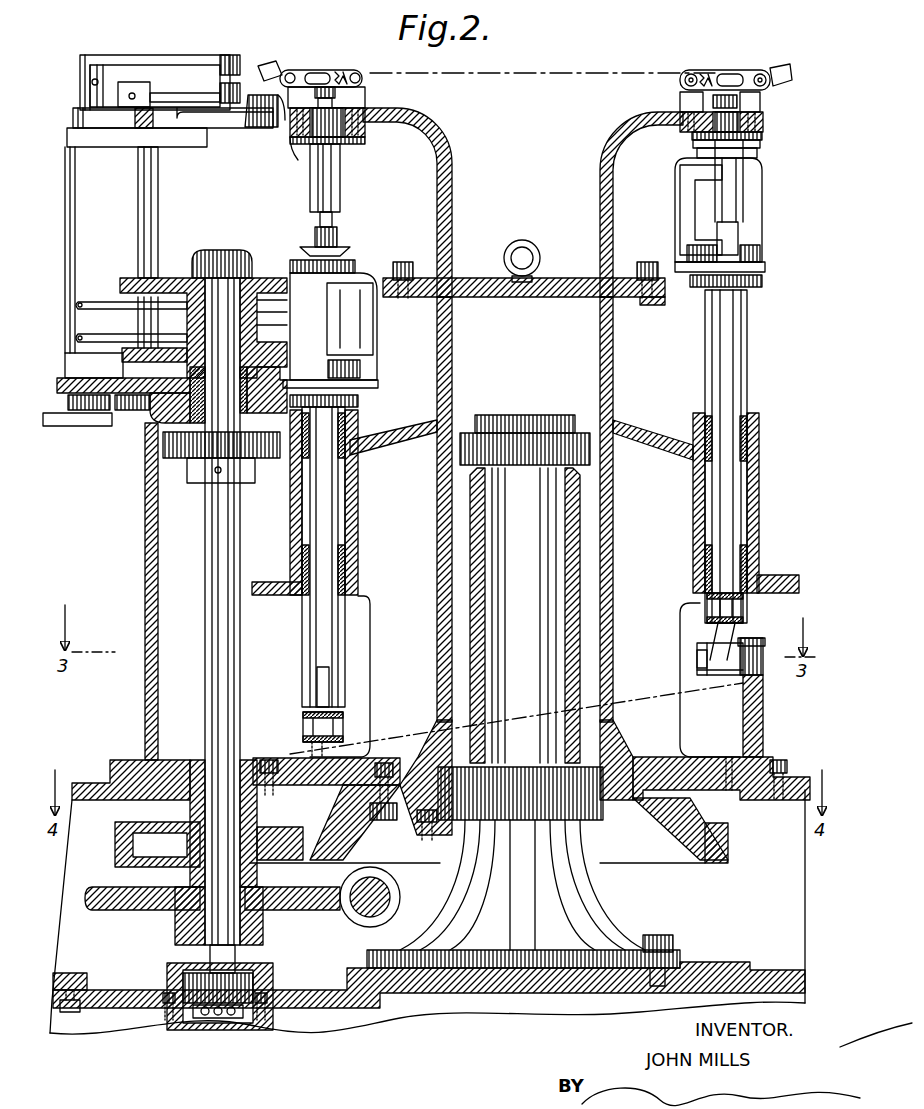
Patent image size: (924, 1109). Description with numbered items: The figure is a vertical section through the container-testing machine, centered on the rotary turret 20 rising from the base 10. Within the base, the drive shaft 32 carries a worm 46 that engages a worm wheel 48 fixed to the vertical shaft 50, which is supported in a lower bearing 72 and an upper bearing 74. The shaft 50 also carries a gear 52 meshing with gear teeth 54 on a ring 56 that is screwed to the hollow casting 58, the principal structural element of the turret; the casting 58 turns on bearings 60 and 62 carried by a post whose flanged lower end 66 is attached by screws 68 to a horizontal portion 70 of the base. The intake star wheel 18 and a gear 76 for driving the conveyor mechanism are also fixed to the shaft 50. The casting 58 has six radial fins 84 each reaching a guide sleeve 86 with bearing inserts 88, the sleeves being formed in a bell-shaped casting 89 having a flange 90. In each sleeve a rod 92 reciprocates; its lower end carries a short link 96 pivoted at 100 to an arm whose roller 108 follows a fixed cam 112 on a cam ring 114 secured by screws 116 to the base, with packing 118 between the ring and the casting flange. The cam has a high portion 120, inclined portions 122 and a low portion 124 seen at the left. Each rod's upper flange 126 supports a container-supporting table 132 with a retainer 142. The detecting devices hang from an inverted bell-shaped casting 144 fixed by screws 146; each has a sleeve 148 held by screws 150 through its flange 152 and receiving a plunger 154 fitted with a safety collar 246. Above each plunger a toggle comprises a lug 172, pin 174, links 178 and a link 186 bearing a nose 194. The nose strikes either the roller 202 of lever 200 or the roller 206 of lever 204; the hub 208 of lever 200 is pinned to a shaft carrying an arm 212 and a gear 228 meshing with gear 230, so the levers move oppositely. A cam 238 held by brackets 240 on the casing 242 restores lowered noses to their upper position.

The base 10 is at (803, 800).
The intake star wheel 18 is at (125, 278).
The rotary turret 20 is at (565, 128).
The drive shaft 32 is at (386, 906).
The worm 46 is at (401, 890).
The worm wheel 48 is at (105, 912).
The vertical shaft 50 is at (214, 256).
The gear 52 is at (125, 850).
The gear teeth 54 is at (730, 845).
The ring 56 is at (705, 862).
The hollow casting 58 is at (622, 752).
The bearing 60 is at (585, 822).
The bearing 62 is at (468, 432).
The flanged lower end 66 is at (590, 920).
The screws 68 is at (675, 940).
The horizontal portion 70 is at (703, 982).
The lower bearing 72 is at (248, 980).
The upper bearing 74 is at (190, 376).
The gear 76 is at (198, 482).
The fins 84 is at (371, 652).
The guide sleeve 86 is at (358, 498).
The bearing inserts 88 is at (346, 442).
The bell-shaped casting 89 is at (660, 432).
The flange 90 is at (262, 596).
The rod 92 is at (748, 381).
The short link 96 is at (320, 692).
The pivot 100 is at (346, 716).
The roller 108 is at (742, 688).
The cam 112 is at (285, 760).
The cam ring 114 is at (318, 797).
The screws 116 is at (778, 760).
The packing 118 is at (728, 757).
The high portion 120 is at (765, 685).
The inclined portions 122 is at (655, 692).
The low portion 124 is at (292, 756).
The flange 126 is at (358, 400).
The container-supporting table 132 is at (378, 385).
The retainer 142 is at (378, 340).
The inverted bell-shaped casting 144 is at (450, 210).
The screws 146 is at (412, 262).
The sleeve 148 is at (333, 190).
The screws 150 is at (308, 138).
The flange 152 is at (345, 140).
The plunger 154 is at (336, 223).
The lug 172 is at (366, 100).
The pin 174 is at (360, 80).
The links 178 is at (348, 72).
The link 186 is at (318, 70).
The nose 194 is at (274, 72).
The lever 200 is at (206, 62).
The roller 202 is at (240, 60).
The lever 204 is at (160, 95).
The roller 206 is at (220, 88).
The hub 208 is at (80, 82).
The arm 212 is at (48, 428).
The gear 228 is at (100, 412).
The gear 230 is at (136, 412).
The cam 238 is at (284, 128).
The brackets 240 is at (226, 127).
The casing 242 is at (127, 202).
The safety collar 246 is at (332, 237).